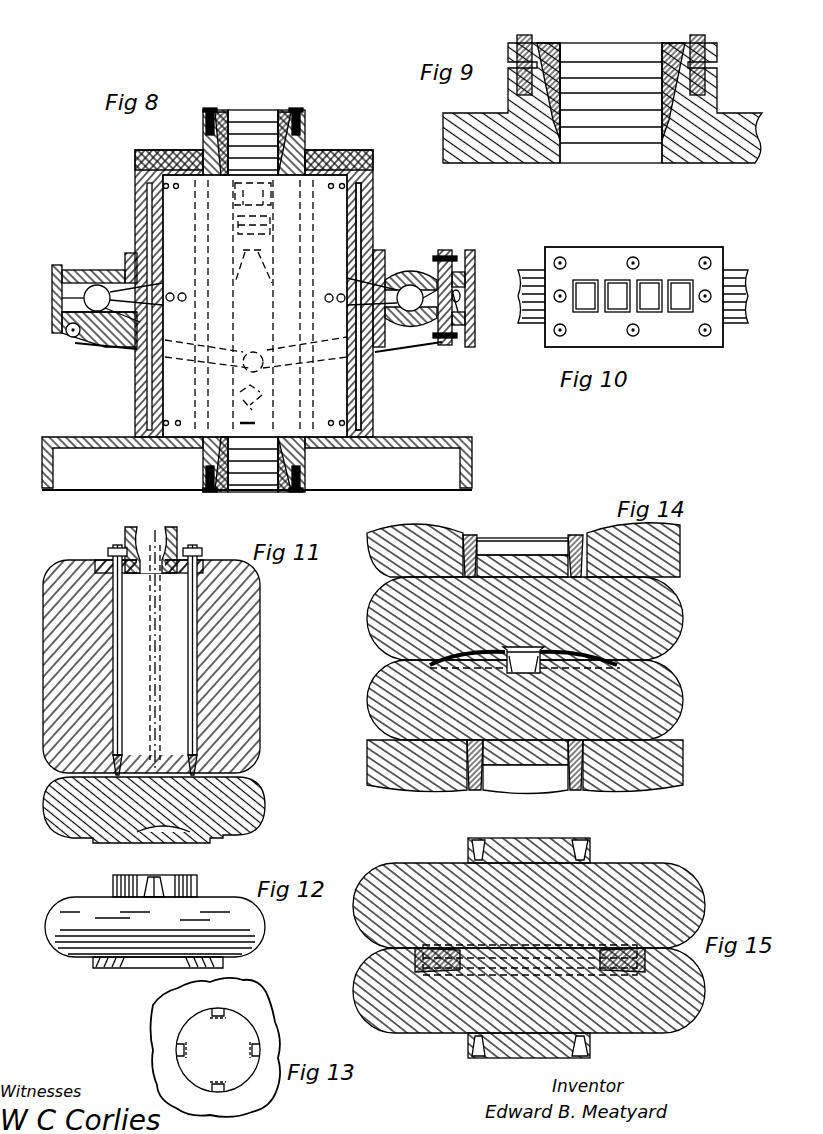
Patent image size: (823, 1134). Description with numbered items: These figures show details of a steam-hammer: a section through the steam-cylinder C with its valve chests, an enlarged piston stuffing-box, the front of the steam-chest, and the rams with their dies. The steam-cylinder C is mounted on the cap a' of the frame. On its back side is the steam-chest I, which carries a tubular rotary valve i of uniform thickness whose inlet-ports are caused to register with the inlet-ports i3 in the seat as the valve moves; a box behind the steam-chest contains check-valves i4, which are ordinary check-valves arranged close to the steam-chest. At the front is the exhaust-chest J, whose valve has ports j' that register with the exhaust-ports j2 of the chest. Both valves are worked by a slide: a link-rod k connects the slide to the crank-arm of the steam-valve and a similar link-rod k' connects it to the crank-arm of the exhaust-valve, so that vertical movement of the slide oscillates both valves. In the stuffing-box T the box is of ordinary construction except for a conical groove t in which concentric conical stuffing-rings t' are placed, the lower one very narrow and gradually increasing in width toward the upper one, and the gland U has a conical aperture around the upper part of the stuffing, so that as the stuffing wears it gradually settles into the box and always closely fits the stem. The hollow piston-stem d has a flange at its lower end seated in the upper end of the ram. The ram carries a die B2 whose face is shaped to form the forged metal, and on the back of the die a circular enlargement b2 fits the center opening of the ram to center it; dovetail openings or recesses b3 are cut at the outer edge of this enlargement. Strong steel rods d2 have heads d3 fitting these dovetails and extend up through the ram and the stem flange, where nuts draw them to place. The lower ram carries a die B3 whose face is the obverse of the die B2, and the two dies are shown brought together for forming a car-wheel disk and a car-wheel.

In FIG. 8, the steam-cylinder C is at (390, 421).
In FIG. 8, the stuffing-box T is at (305, 132).
In FIG. 9, the stuffing-box T is at (602, 120).
In FIG. 8, the conical groove t is at (253, 301).
In FIG. 9, the conical groove t is at (611, 126).
In FIG. 8, the conical stuffing-rings t' is at (253, 306).
In FIG. 9, the conical stuffing-rings t' is at (611, 122).
In FIG. 8, the gland U is at (327, 485).
In FIG. 9, the gland U is at (536, 68).
In FIG. 8, the cap a' is at (257, 451).
In FIG. 8, the exhaust-ports j2 is at (150, 226).
In FIG. 8, the exhaust-chest J is at (52, 325).
In FIG. 8, the ports of the exhaust-valve j' is at (115, 280).
In FIG. 8, the link-rod k' is at (99, 343).
In FIG. 8, the steam-chest I is at (391, 298).
In FIG. 8, the rotary valve i is at (414, 288).
In FIG. 8, the check-valves i4 is at (462, 301).
In FIG. 10, the check-valves i4 is at (618, 305).
In FIG. 8, the link-rod k is at (408, 357).
In FIG. 8, the inlet-ports in the seat i3 is at (365, 231).
In FIG. 11, the piston-stem d is at (180, 534).
In FIG. 11, the steel rods d2 is at (197, 697).
In FIG. 14, the steel rods d2 is at (476, 770).
In FIG. 11, the heads d3 is at (197, 768).
In FIG. 14, the heads d3 is at (465, 540).
In FIG. 11, the die B2 is at (258, 800).
In FIG. 12, the die B2 is at (155, 932).
In FIG. 13, the die B2 is at (165, 1025).
In FIG. 14, the die B2 is at (536, 618).
In FIG. 14, the die B3 is at (536, 700).
In FIG. 12, the circular enlargement b2 is at (197, 885).
In FIG. 13, the circular enlargement b2 is at (218, 1050).
In FIG. 14, the circular enlargement b2 is at (522, 560).
In FIG. 12, the openings or recesses b3 is at (118, 888).
In FIG. 13, the openings or recesses b3 is at (224, 1010).